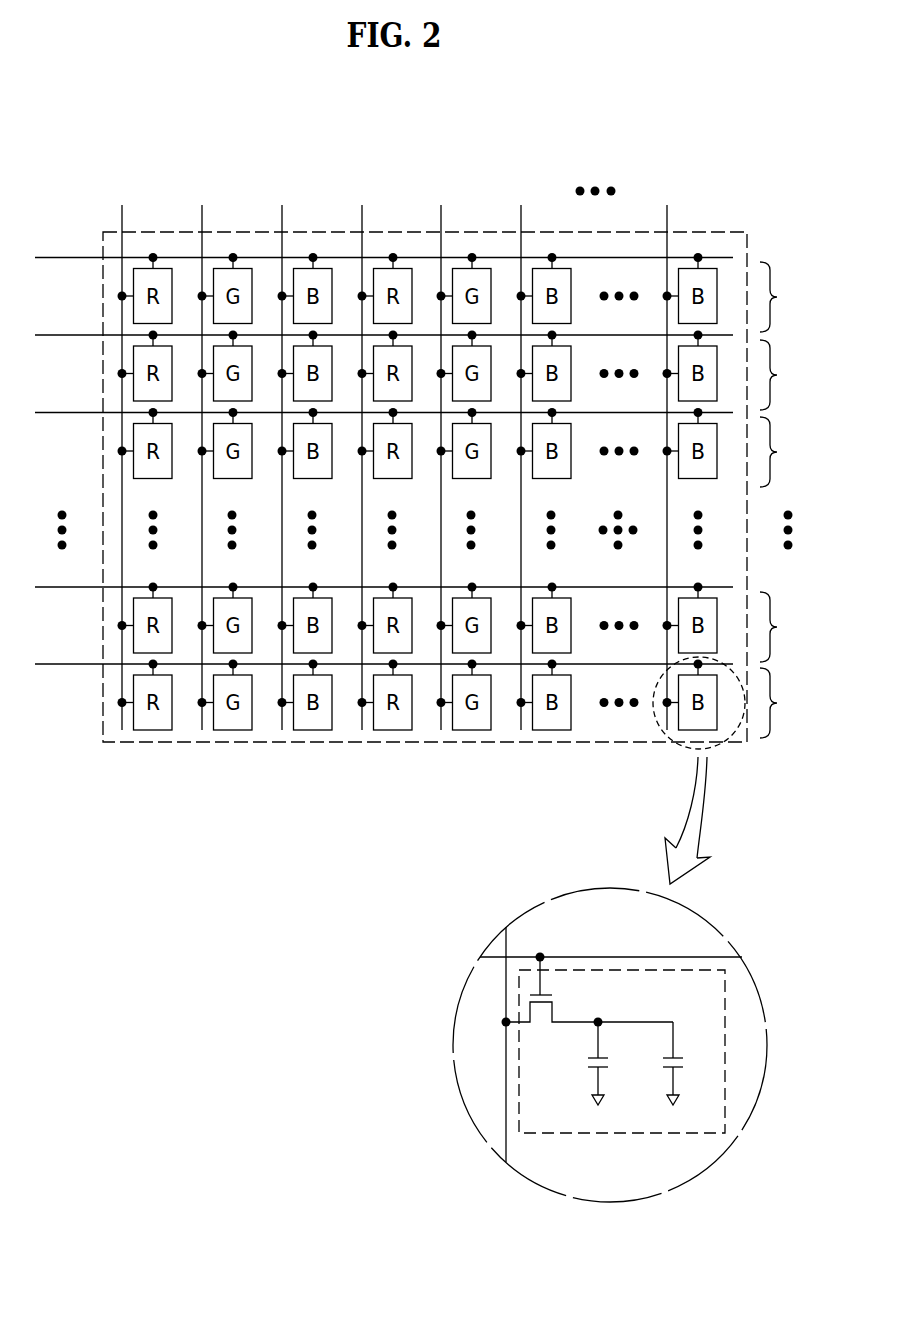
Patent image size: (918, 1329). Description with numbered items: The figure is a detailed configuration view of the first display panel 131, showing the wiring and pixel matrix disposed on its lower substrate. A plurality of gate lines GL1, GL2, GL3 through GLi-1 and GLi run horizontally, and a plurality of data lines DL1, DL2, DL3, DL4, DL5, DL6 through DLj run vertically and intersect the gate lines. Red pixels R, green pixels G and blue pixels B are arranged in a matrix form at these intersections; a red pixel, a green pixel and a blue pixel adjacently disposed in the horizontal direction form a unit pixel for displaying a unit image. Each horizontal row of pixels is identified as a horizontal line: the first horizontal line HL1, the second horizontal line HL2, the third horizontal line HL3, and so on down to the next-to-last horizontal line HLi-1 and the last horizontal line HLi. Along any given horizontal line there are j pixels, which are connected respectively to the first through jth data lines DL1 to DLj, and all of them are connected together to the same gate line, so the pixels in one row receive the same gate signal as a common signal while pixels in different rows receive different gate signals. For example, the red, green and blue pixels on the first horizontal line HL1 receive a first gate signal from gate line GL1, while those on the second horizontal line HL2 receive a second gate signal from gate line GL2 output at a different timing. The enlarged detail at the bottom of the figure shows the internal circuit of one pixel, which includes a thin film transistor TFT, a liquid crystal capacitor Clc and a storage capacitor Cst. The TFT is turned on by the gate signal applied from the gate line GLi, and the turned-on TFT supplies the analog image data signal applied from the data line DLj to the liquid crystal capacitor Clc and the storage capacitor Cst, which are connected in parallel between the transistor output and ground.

The first display panel 131 is at (705, 231).
The first data line DL1 is at (125, 455).
The second data line DL2 is at (205, 455).
The third data line DL3 is at (285, 455).
The fourth data line DL4 is at (365, 455).
The fifth data line DL5 is at (444, 455).
The sixth data line DL6 is at (524, 455).
The jth data line DLj is at (418, 998).
The first gate line GL1 is at (384, 247).
The second gate line GL2 is at (384, 324).
The third gate line GL3 is at (384, 402).
The (i-1)th gate line GLi-1 is at (384, 574).
The ith gate line GLi is at (571, 955).
The first horizontal line HL1 is at (787, 297).
The second horizontal line HL2 is at (787, 375).
The third horizontal line HL3 is at (787, 452).
The (i-1)th horizontal line HLi-1 is at (799, 627).
The ith horizontal line HLi is at (788, 703).
The thin film transistor TFT is at (589, 1002).
The liquid crystal capacitor Clc is at (612, 1063).
The storage capacitor Cst is at (688, 1063).